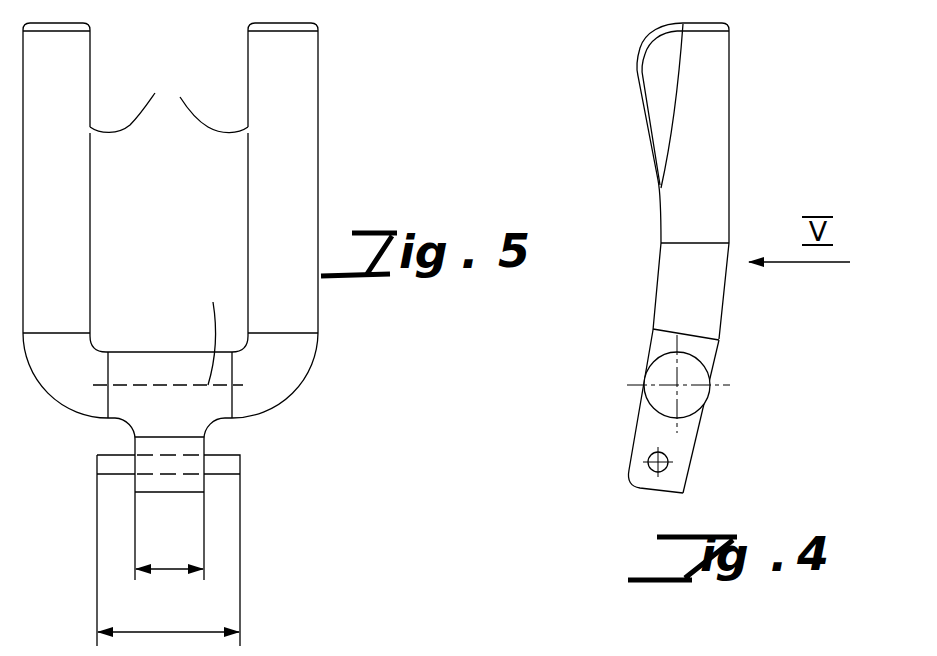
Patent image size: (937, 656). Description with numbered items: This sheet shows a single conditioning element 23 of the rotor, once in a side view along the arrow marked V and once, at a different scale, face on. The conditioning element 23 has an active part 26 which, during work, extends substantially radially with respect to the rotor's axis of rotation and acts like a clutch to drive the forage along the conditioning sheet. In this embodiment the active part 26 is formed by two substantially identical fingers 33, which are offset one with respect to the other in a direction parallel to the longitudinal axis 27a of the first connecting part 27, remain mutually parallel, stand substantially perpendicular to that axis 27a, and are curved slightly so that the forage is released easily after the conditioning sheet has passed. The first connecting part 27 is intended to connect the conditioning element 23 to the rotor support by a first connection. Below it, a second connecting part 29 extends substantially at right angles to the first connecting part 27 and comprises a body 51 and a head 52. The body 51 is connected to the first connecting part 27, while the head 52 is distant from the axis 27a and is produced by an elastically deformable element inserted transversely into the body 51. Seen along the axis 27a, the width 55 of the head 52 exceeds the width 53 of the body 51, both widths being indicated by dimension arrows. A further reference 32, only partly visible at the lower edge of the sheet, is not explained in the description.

In FIG. 5, the conditioning element 23 is at (320, 185).
In FIG. 4, the conditioning element 23 is at (632, 186).
In FIG. 4, the active part 26 is at (734, 128).
In FIG. 5, the first connecting part 27 is at (150, 350).
In FIG. 4, the first connecting part 27 is at (702, 361).
In FIG. 5, the longitudinal axis of the connecting part 27a is at (216, 327).
In FIG. 4, the longitudinal axis of the connecting part 27a is at (677, 380).
In FIG. 5, the second connecting part 29 is at (134, 443).
In FIG. 4, the second connecting part 29 is at (629, 443).
In FIG. 4, the bracket 32 is at (639, 651).
In FIG. 5, the fingers 33 is at (169, 100).
In FIG. 4, the fingers 33 is at (643, 47).
In FIG. 5, the body 51 is at (207, 445).
In FIG. 4, the body 51 is at (694, 440).
In FIG. 5, the head 52 is at (243, 458).
In FIG. 4, the head 52 is at (663, 471).
In FIG. 5, the width of the body 53 is at (169, 552).
In FIG. 5, the width of the head 55 is at (168, 615).